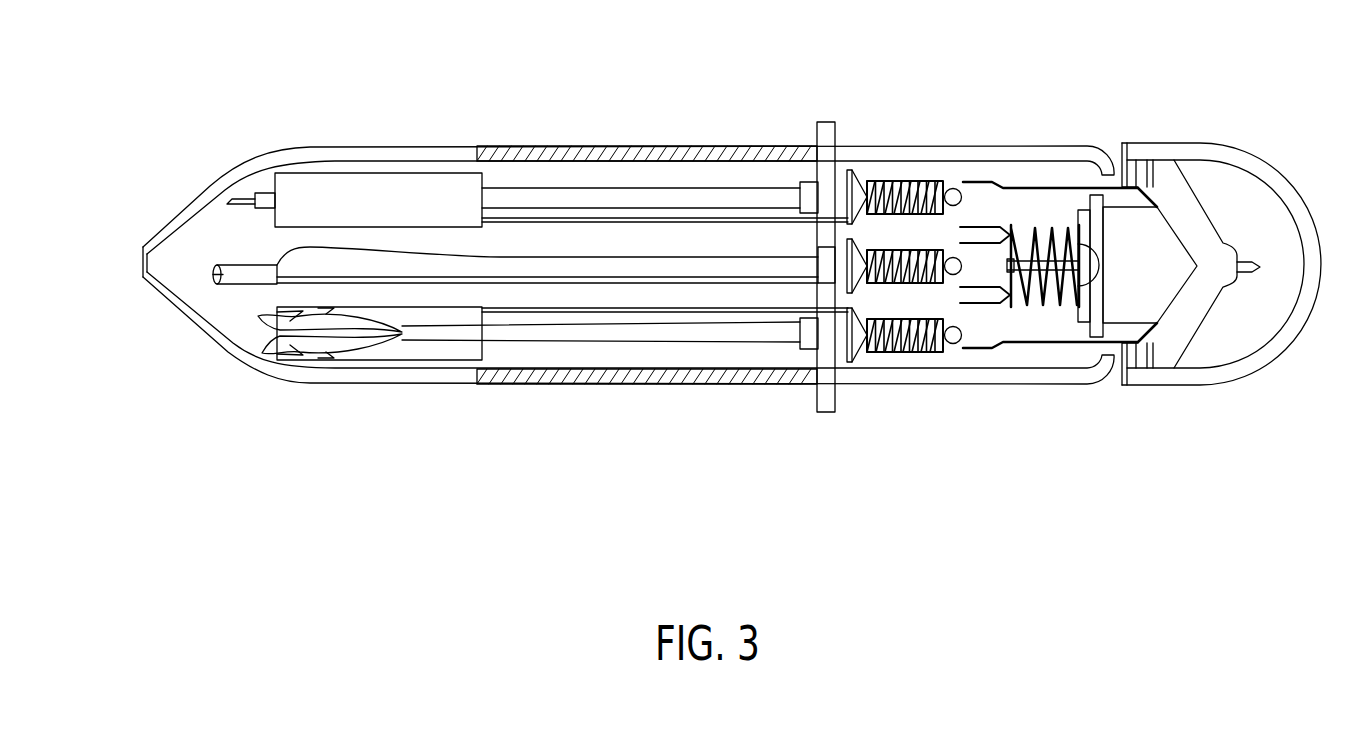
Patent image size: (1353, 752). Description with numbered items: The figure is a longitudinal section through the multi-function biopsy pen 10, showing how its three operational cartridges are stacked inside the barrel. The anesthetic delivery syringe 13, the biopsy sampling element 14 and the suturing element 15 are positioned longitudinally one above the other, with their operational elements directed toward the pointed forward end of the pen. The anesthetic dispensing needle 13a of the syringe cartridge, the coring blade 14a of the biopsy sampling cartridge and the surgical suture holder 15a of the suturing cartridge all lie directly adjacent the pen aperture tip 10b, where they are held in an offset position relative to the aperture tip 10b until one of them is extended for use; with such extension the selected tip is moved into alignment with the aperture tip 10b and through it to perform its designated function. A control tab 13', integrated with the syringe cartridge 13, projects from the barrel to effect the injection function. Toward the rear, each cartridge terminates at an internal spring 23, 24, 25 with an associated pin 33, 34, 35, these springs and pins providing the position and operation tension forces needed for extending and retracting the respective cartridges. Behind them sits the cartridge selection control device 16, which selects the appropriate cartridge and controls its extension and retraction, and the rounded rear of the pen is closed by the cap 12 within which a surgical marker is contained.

The biopsy pen 10 is at (547, 436).
The pen aperture tip 10b is at (142, 256).
The cap 12 is at (1289, 325).
The anesthetic delivery syringe cartridge 13 is at (561, 132).
The anesthetic dispensing needle 13a is at (243, 196).
The control tab 13' is at (831, 208).
The biopsy sampling element cartridge 14 is at (663, 270).
The coring blade 14a is at (214, 276).
The suturing element cartridge 15 is at (655, 335).
The surgical suture holder 15a is at (263, 352).
The cartridge selection control device 16 is at (1132, 140).
The internal spring 23 is at (914, 181).
The internal spring 24 is at (897, 250).
The internal spring 25 is at (903, 353).
The pin 33 is at (953, 188).
The pin 34 is at (959, 272).
The pin 35 is at (955, 344).